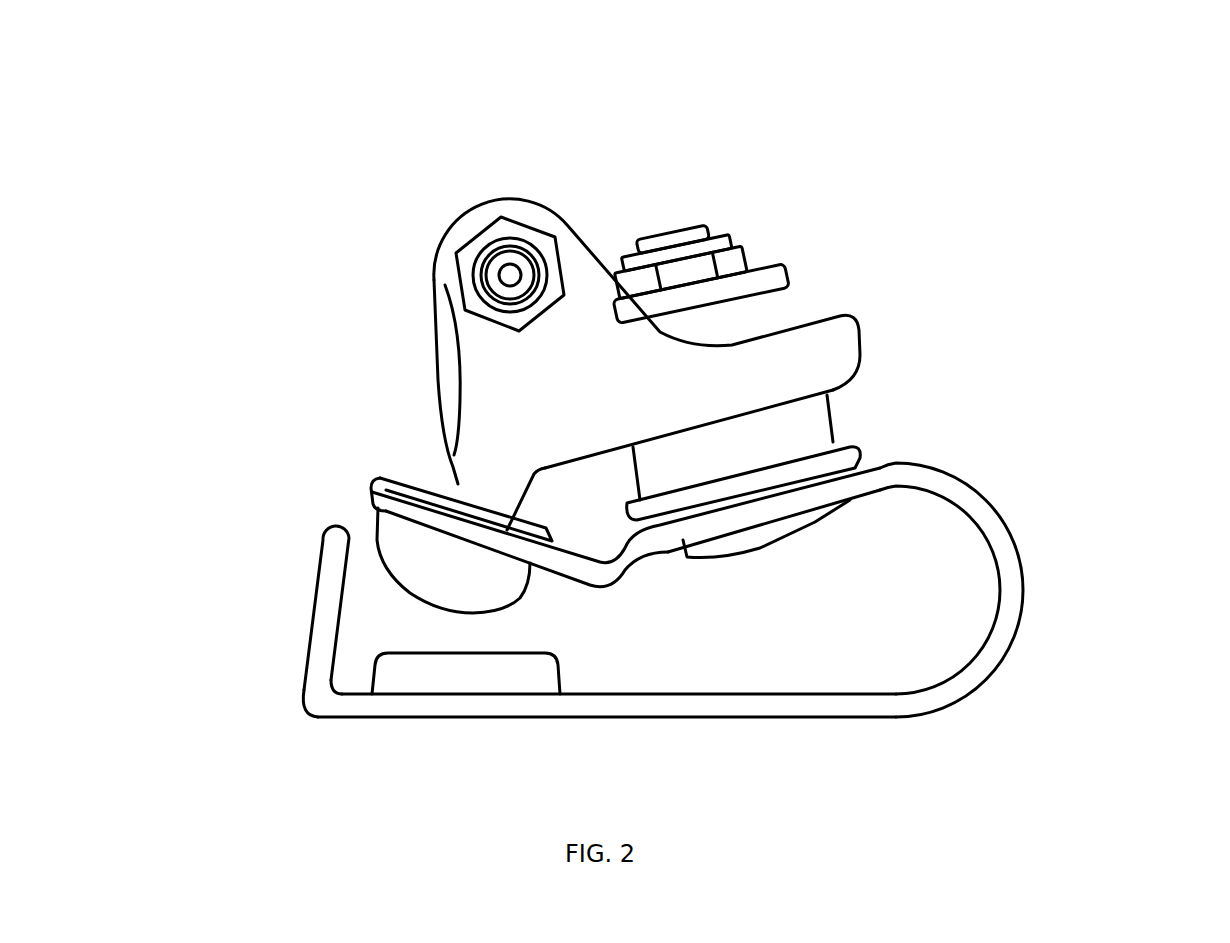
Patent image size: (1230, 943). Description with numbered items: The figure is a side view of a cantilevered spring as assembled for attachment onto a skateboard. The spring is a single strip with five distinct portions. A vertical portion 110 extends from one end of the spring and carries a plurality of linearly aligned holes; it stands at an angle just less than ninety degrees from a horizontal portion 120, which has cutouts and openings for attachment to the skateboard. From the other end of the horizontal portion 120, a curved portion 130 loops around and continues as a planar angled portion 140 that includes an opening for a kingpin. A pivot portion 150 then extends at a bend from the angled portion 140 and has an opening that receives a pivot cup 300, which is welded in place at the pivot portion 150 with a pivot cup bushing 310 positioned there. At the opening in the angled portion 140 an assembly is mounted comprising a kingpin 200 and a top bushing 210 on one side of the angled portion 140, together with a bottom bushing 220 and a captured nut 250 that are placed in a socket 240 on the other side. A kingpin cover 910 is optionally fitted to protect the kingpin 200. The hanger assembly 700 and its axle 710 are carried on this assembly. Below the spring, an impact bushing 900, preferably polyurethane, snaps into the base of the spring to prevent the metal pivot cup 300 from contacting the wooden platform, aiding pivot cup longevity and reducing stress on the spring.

The hanger assembly 700 is at (517, 195).
The axle 710 is at (522, 270).
The kingpin 200 is at (722, 232).
The top bushing 210 is at (752, 257).
The bottom bushing 220 is at (832, 390).
The kingpin cover 910 is at (837, 513).
The socket 240 is at (790, 519).
The captured nut 250 is at (785, 543).
The pivot portion 150 is at (542, 580).
The pivot cup bushing 310 is at (400, 492).
The pivot cup 300 is at (427, 540).
The angled portion 140 is at (968, 491).
The curved portion 130 is at (900, 717).
The horizontal portion 120 is at (350, 720).
The vertical portion 110 is at (310, 625).
The impact bushing 900 is at (452, 668).